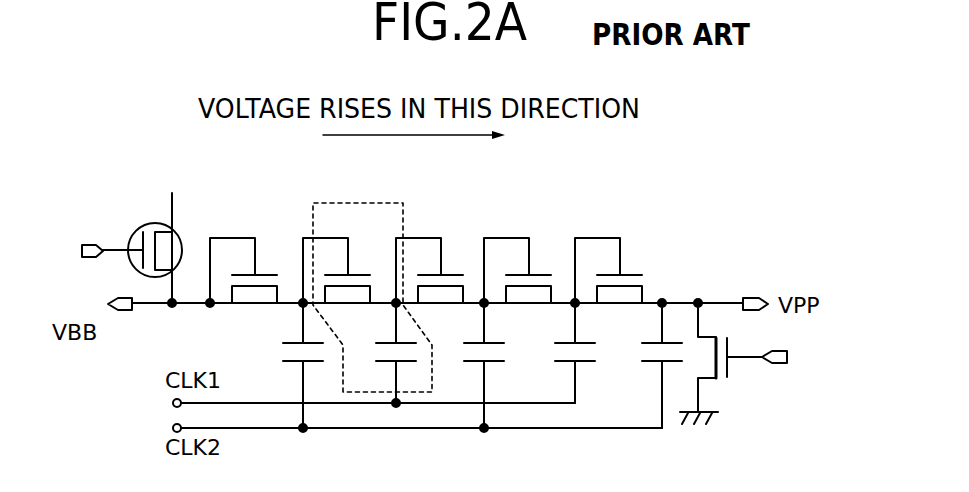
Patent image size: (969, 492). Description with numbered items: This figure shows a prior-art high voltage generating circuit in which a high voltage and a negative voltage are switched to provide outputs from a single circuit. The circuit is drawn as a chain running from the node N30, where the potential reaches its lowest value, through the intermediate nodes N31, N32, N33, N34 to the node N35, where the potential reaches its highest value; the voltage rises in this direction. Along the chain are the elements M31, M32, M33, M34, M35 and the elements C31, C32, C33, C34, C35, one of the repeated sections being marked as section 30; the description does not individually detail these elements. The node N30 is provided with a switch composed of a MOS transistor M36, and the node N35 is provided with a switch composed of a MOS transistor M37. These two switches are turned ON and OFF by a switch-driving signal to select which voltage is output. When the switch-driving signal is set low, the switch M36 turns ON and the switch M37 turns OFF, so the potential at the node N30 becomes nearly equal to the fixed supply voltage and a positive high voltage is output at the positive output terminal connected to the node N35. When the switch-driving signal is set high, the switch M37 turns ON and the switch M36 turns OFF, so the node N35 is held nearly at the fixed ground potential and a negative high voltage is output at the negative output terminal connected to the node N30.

The charge pump unit stage 30 is at (372, 286).
The transfer transistor M31 is at (244, 256).
The transfer transistor M32 is at (336, 257).
The transfer transistor M33 is at (430, 257).
The transfer transistor M34 is at (517, 257).
The transfer transistor M35 is at (608, 257).
The MOS transistor switch M36 is at (133, 235).
The MOS transistor switch M37 is at (753, 382).
The pumping capacitor C31 is at (287, 367).
The pumping capacitor C32 is at (381, 355).
The pumping capacitor C33 is at (471, 367).
The pumping capacitor C34 is at (561, 353).
The pumping capacitor C35 is at (648, 365).
The node N30 is at (177, 316).
The node N31 is at (278, 316).
The node N32 is at (372, 316).
The node N33 is at (459, 316).
The node N34 is at (551, 316).
The node N35 is at (705, 290).